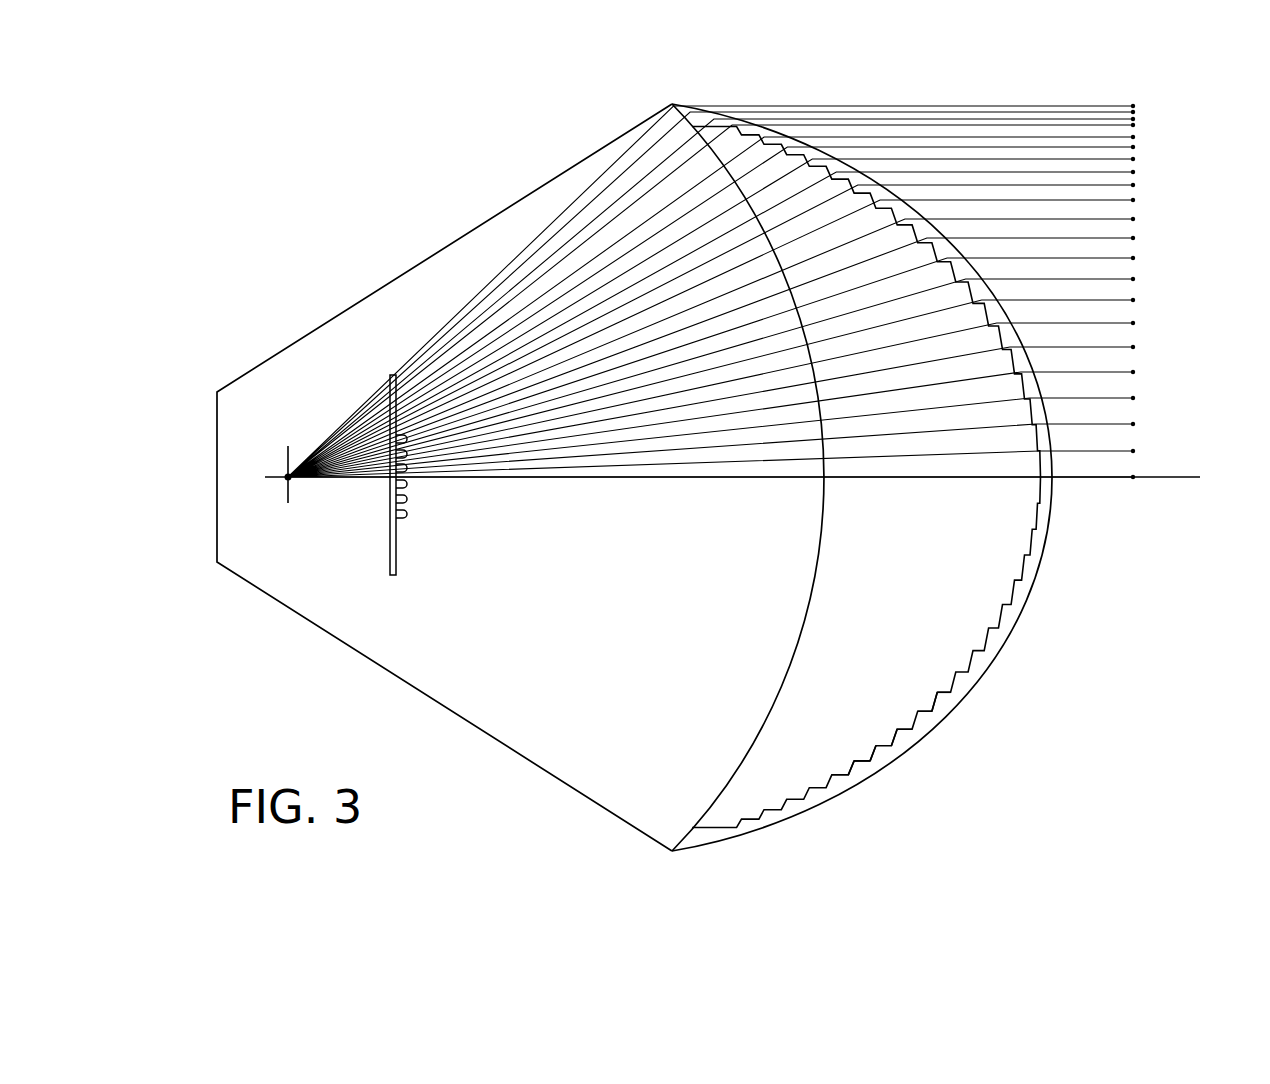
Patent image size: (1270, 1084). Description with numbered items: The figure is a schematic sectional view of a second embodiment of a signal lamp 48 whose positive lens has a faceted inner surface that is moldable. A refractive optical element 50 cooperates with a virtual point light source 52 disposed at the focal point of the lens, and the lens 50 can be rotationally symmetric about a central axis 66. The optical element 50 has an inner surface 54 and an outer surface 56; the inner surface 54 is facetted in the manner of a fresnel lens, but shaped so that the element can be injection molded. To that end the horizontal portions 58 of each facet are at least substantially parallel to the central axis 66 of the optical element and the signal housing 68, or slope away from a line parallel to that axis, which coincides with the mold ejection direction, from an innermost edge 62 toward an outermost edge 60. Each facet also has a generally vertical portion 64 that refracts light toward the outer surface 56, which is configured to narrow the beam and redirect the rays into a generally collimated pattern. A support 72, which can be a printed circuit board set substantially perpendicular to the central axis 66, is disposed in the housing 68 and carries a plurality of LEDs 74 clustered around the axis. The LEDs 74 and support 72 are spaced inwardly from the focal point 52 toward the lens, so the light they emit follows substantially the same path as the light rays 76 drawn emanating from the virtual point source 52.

The signal lamp 48 is at (333, 167).
The refractive optical element 50 is at (913, 737).
The virtual point light source 52 is at (284, 480).
The inner surface 54 is at (893, 737).
The outer surface 56 is at (985, 676).
The horizontal portion 58 is at (922, 712).
The outermost edge 60 is at (866, 763).
The innermost edge 62 is at (937, 718).
The vertical portion 64 is at (928, 708).
The central axis 66 is at (1165, 477).
The signal housing 68 is at (533, 766).
The support 72 is at (397, 557).
The LEDs 74 is at (408, 515).
The light rays 76 is at (669, 455).